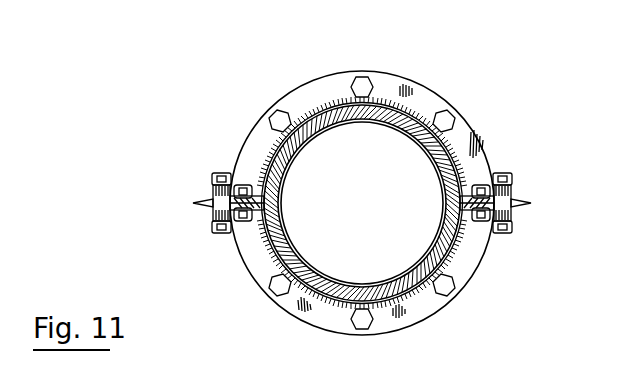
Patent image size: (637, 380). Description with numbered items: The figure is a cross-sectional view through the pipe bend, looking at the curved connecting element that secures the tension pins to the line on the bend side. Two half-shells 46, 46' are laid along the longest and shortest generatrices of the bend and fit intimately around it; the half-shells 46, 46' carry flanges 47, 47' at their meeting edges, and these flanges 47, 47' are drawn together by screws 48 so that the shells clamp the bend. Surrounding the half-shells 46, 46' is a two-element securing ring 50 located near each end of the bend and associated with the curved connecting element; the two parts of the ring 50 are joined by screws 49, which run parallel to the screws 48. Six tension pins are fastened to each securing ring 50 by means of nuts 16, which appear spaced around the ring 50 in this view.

The securing ring 50 is at (340, 85).
The nuts 16 is at (281, 110).
The half-shell 46' is at (366, 177).
The half-shell 46 is at (364, 225).
The flange 47' is at (213, 203).
The flange 47 is at (514, 203).
The screws 48 is at (238, 172).
The screws 49 is at (220, 233).